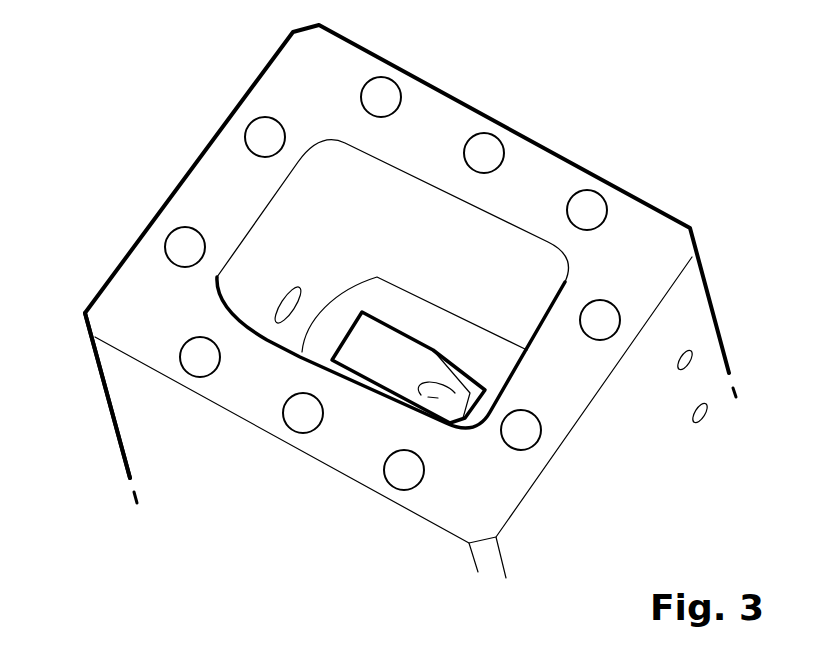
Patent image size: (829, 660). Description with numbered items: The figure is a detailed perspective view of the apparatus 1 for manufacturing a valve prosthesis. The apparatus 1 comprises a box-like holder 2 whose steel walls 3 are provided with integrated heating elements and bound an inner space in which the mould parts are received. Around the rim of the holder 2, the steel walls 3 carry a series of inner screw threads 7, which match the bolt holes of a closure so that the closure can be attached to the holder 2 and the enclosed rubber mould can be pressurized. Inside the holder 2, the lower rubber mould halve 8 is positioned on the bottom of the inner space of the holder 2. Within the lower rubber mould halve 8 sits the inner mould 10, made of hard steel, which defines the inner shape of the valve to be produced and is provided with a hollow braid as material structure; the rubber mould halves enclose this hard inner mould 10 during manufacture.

The apparatus 1 is at (90, 91).
The holder 2 is at (540, 178).
The steel walls 3 is at (123, 302).
The inner screw thread 7 is at (183, 244).
The lower rubber mould halve 8 is at (478, 340).
The inner mould 10 is at (383, 347).